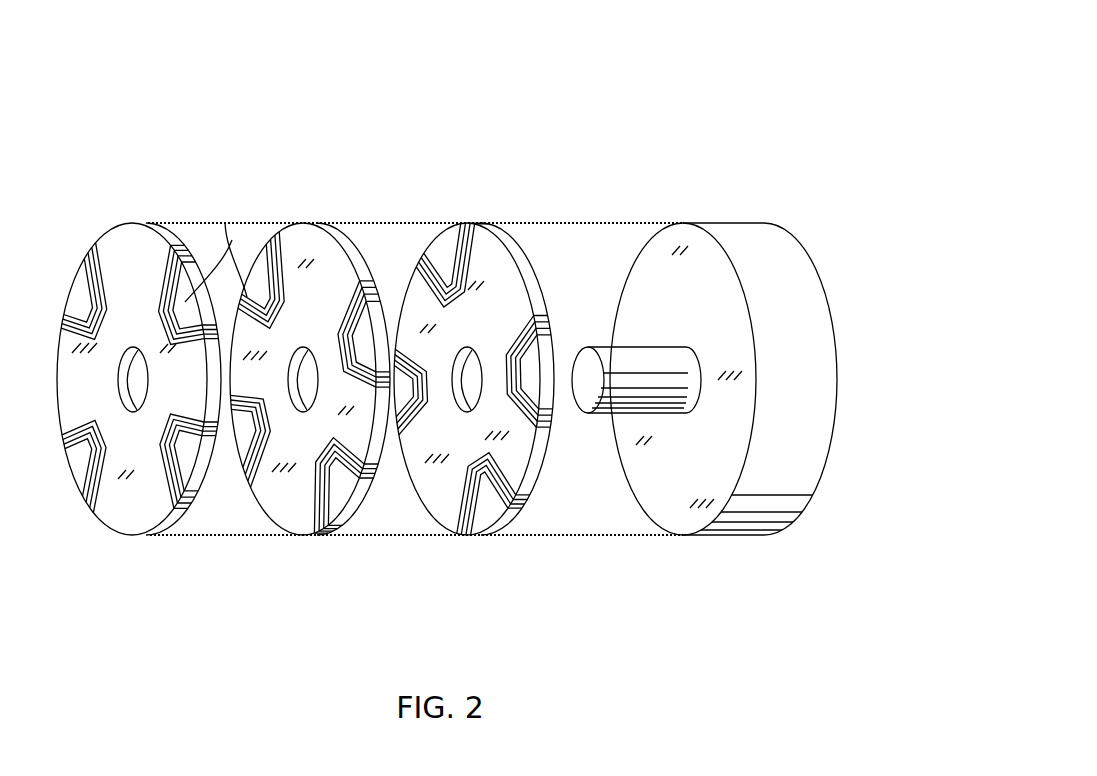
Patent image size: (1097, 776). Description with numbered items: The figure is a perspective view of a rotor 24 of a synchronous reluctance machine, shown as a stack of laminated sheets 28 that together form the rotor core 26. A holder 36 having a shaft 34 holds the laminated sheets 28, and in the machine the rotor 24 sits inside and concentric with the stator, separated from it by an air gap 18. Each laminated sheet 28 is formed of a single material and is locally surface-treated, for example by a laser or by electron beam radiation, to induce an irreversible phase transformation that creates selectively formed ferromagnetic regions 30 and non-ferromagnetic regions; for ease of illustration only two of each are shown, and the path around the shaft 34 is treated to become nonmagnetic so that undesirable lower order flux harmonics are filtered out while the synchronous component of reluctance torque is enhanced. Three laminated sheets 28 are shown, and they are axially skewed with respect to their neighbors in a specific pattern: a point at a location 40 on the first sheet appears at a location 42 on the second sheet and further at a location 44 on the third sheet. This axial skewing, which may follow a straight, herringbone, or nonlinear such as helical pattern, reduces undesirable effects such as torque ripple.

The air gap 18 is at (134, 354).
The rotor 24 is at (683, 80).
The rotor core 26 is at (112, 565).
The laminated sheets 28 is at (143, 452).
The ferromagnetic regions 30 is at (247, 297).
The shaft 34 is at (650, 350).
The holder 36 is at (737, 228).
The location on first sheet 40 is at (133, 283).
The location on second sheet 42 is at (327, 305).
The location on third sheet 44 is at (498, 337).